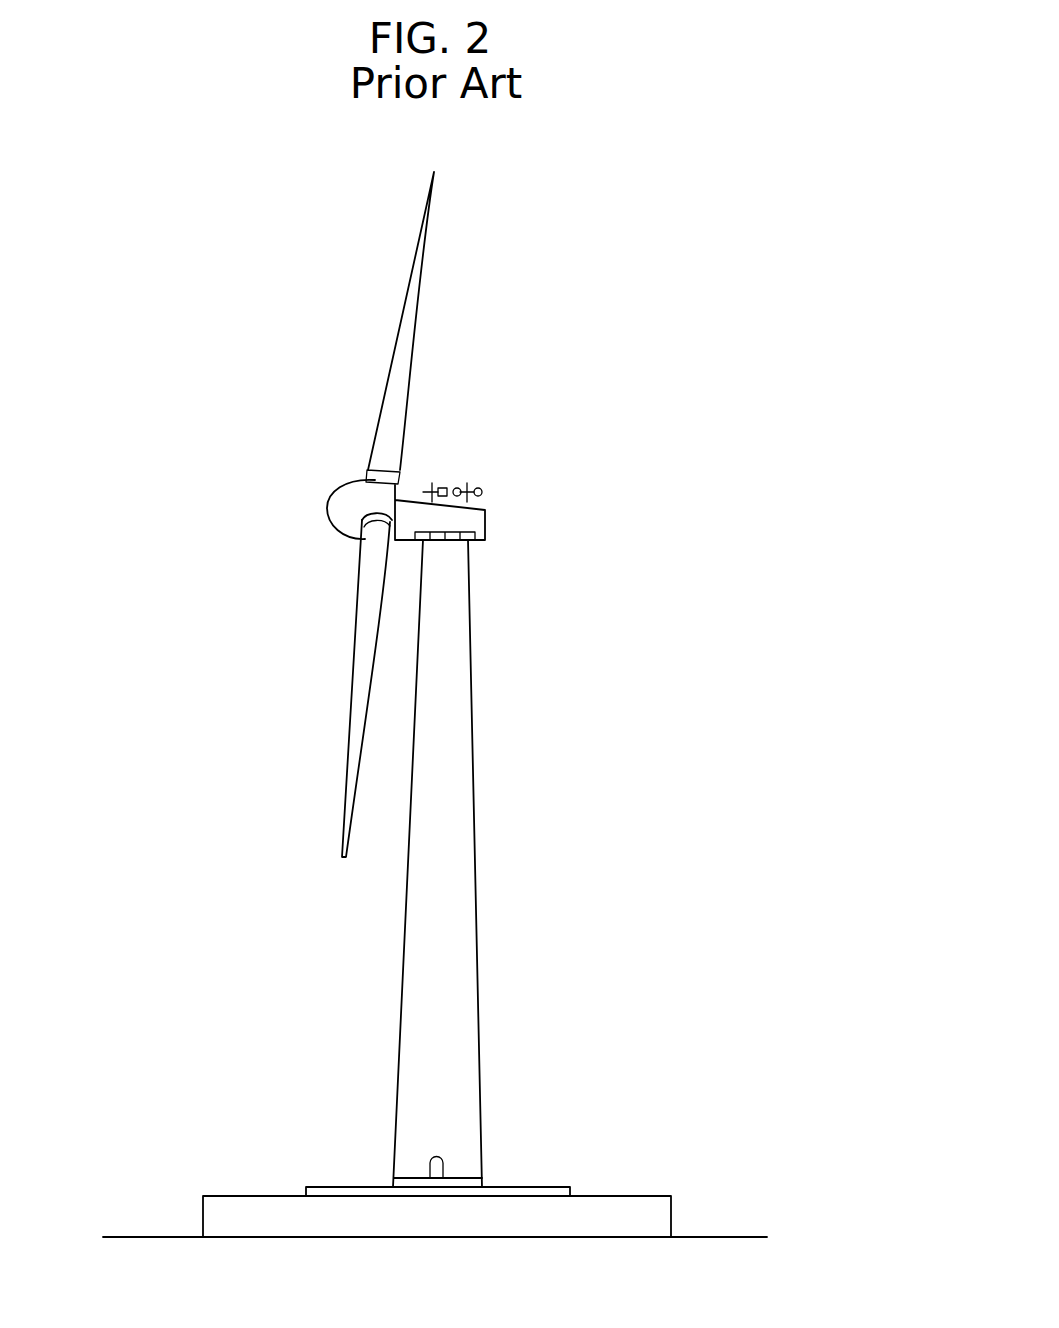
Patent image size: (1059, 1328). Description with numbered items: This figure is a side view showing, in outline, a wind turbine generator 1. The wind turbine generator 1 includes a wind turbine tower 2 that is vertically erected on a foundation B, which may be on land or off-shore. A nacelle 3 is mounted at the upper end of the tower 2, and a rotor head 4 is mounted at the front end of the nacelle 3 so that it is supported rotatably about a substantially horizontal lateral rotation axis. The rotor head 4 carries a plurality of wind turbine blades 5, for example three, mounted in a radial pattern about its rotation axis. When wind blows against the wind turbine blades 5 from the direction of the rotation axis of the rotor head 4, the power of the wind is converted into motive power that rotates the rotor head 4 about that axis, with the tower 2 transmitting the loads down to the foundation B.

The wind turbine generator 1 is at (582, 432).
The wind turbine tower 2 is at (472, 724).
The nacelle 3 is at (487, 508).
The rotor head 4 is at (328, 502).
The wind turbine blades 5 is at (423, 270).
The foundation B is at (631, 1196).